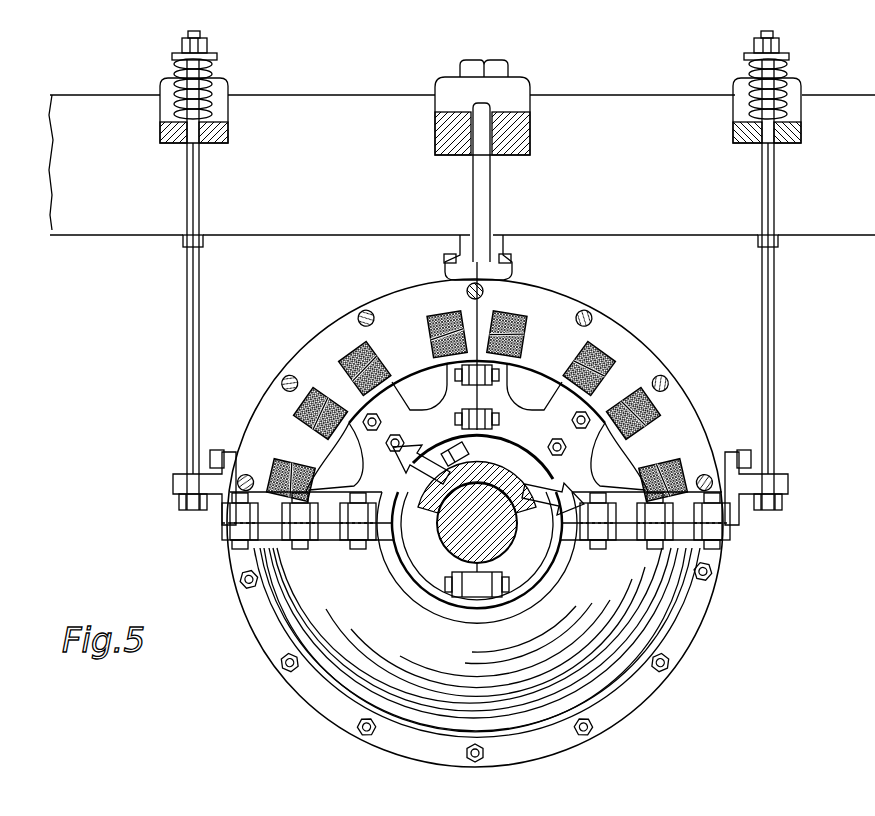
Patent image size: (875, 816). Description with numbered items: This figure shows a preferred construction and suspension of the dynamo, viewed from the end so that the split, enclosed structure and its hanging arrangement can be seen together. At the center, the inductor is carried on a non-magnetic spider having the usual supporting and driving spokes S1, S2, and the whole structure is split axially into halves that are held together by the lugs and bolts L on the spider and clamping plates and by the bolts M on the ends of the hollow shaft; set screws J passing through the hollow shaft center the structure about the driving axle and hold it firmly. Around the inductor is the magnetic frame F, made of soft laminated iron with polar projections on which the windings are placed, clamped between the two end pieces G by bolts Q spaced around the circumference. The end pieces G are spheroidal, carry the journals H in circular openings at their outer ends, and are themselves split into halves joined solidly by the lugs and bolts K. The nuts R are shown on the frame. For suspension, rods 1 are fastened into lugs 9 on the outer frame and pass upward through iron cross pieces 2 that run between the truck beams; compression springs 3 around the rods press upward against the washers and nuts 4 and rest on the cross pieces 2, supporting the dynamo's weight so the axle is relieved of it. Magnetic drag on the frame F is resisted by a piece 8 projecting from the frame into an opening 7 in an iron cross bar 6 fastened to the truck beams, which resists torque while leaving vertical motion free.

The rods 1 is at (199, 182).
The cross pieces 2 is at (228, 90).
The compression springs 3 is at (174, 65).
The washers and nuts 4 is at (214, 50).
The cross bar 6 is at (531, 85).
The opening 7 is at (462, 150).
The piece 8 is at (470, 103).
The lugs 9 is at (175, 484).
The magnetic frame F is at (477, 406).
The bolts Q is at (585, 322).
The lugs and bolts L is at (500, 372).
The nuts R is at (556, 439).
The set screws J is at (464, 452).
The spoke S1 is at (418, 446).
The spoke S2 is at (553, 492).
The lugs and bolts K is at (306, 550).
The end pieces G is at (477, 642).
The journals H is at (548, 592).
The bolts M is at (512, 598).